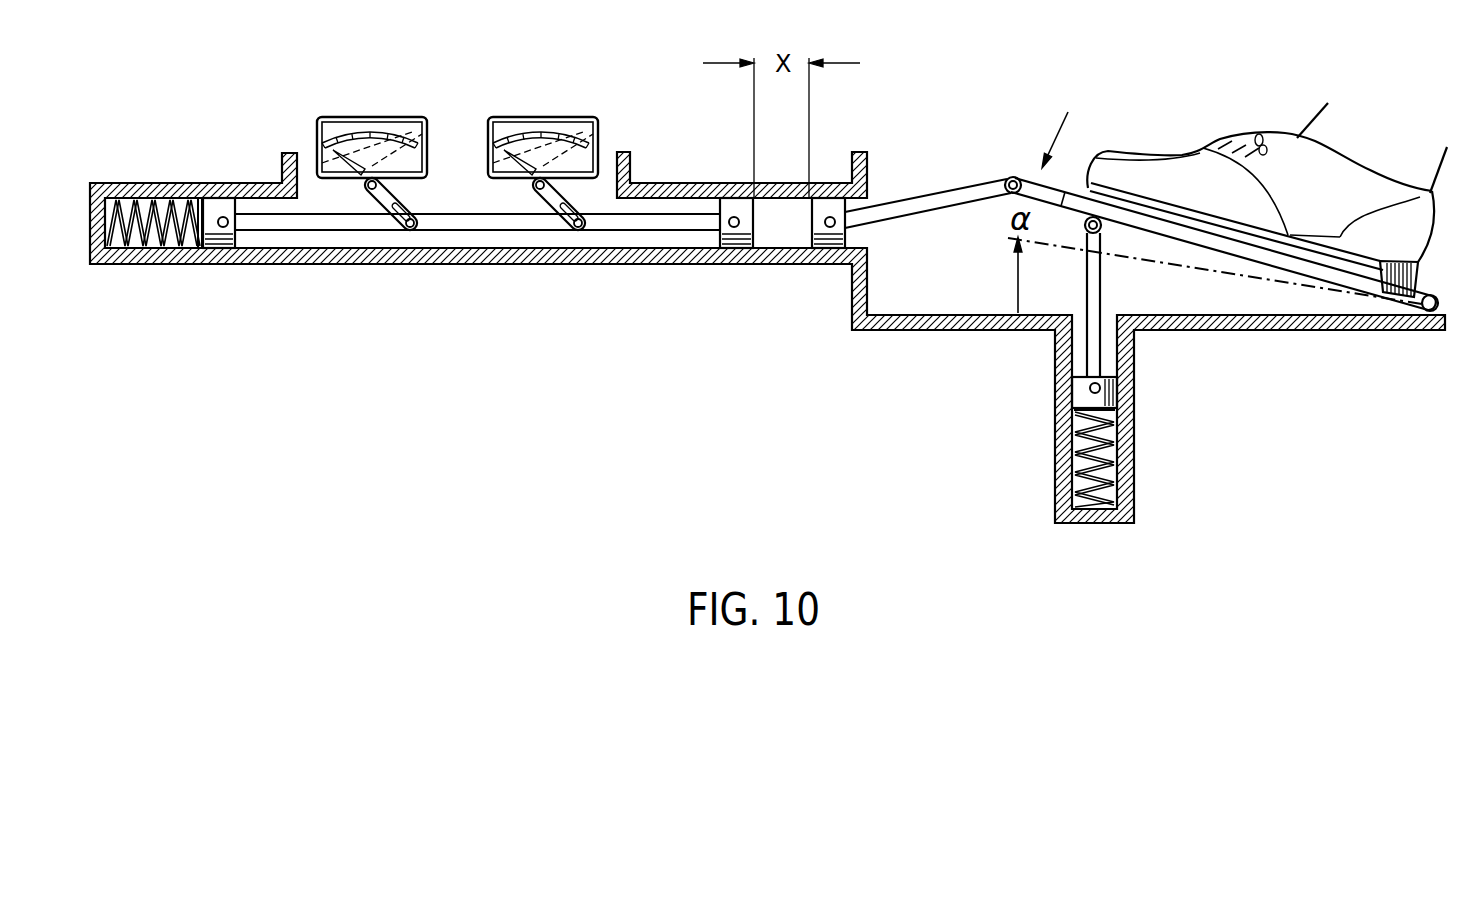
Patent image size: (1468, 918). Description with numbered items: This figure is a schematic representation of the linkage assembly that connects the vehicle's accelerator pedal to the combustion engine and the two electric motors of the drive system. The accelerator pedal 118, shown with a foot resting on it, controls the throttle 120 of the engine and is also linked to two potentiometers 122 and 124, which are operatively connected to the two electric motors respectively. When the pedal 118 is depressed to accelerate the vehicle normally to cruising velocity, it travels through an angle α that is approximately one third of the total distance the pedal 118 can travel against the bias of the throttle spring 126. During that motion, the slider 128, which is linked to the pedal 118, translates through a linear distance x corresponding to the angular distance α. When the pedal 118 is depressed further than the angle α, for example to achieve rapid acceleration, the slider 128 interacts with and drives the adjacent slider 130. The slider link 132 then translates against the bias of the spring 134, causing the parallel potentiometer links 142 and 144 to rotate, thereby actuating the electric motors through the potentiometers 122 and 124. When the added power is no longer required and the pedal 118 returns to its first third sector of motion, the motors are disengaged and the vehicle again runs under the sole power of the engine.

The accelerator pedal 118 is at (1276, 263).
The throttle 120 is at (1083, 287).
The potentiometer 122 is at (346, 118).
The potentiometer 124 is at (514, 118).
The throttle spring 126 is at (1100, 505).
The slider 128 is at (829, 247).
The slider 130 is at (740, 247).
The slider link 132 is at (545, 231).
The spring 134 is at (140, 264).
The potentiometer link 142 is at (382, 211).
The potentiometer link 144 is at (573, 194).